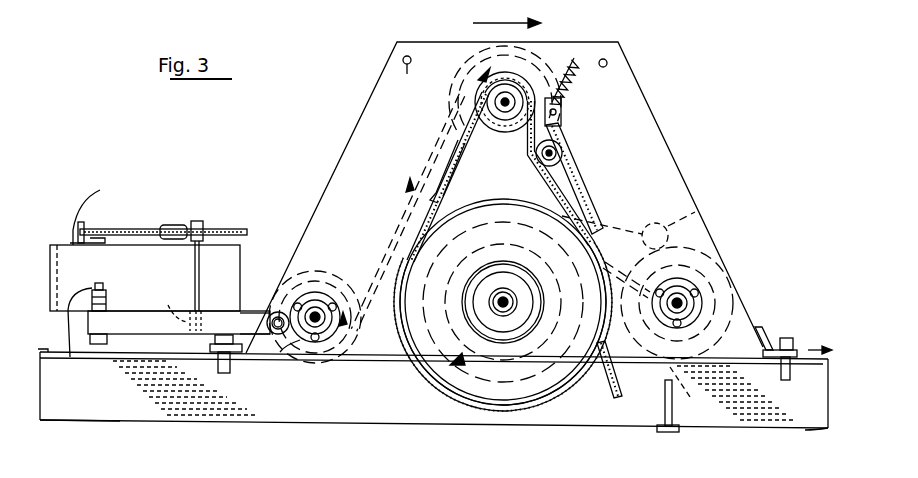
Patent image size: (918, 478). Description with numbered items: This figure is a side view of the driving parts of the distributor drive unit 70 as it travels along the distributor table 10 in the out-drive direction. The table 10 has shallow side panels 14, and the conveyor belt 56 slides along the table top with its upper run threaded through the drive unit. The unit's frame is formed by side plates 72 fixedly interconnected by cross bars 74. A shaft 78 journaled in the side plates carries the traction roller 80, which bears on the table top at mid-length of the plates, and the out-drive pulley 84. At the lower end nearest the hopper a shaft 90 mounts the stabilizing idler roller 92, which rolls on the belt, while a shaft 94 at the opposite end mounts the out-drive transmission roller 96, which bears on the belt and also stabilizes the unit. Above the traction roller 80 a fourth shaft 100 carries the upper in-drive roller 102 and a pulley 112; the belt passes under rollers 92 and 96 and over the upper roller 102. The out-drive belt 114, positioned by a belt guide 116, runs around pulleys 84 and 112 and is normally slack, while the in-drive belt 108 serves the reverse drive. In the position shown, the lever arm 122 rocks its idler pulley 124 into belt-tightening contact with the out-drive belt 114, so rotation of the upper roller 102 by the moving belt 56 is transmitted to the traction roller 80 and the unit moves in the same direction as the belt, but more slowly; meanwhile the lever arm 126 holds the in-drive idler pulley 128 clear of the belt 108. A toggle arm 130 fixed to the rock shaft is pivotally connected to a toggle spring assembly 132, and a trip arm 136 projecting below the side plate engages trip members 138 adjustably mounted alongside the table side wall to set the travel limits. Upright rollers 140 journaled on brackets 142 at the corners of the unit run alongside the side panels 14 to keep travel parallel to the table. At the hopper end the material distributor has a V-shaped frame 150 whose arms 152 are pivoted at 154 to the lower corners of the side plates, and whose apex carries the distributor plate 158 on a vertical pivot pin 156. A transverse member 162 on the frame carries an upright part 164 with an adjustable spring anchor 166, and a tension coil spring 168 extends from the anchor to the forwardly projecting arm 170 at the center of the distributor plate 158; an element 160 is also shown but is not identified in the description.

The distributor table 10 is at (433, 409).
The side panels 14 is at (85, 414).
The conveyor belt 56 is at (392, 242).
The distributor drive unit 70 is at (668, 128).
The side plates 72 is at (668, 150).
The cross bars 74 is at (641, 56).
The shaft 78 is at (503, 302).
The traction roller 80 is at (479, 256).
The out-drive pulley 84 is at (500, 390).
The shaft 90 is at (315, 315).
The roller 92 is at (329, 283).
The shaft 94 is at (680, 302).
The out-drive transmission roller 96 is at (698, 299).
The fourth shaft 100 is at (508, 100).
The upper roller 102 is at (512, 75).
The in-drive belt 108 is at (695, 394).
The pulley 112 is at (500, 118).
The out-drive belt 114 is at (548, 186).
The belt guide 116 is at (437, 172).
The lever arm 122 is at (568, 176).
The belt-tightening idler pulley 124 is at (562, 153).
The lever arm 126 is at (645, 226).
The idler pulley 128 is at (695, 212).
The toggle arm 130 is at (563, 112).
The toggle spring assembly 132 is at (577, 90).
The trip arm 136 is at (612, 399).
The trip members 138 is at (667, 402).
The upright rollers 140 is at (222, 375).
The brackets 142 is at (249, 362).
The frame 150 is at (130, 318).
The arms 152 is at (251, 328).
The pivot 154 is at (283, 346).
The vertical pivot pin 156 is at (107, 276).
The distributor plate 158 is at (60, 263).
The wire 160 is at (72, 355).
The transverse member 162 is at (178, 309).
The part 164 is at (200, 281).
The spring anchor 166 is at (180, 228).
The tension coil spring 168 is at (125, 228).
The forwardly projecting arm 170 is at (98, 207).